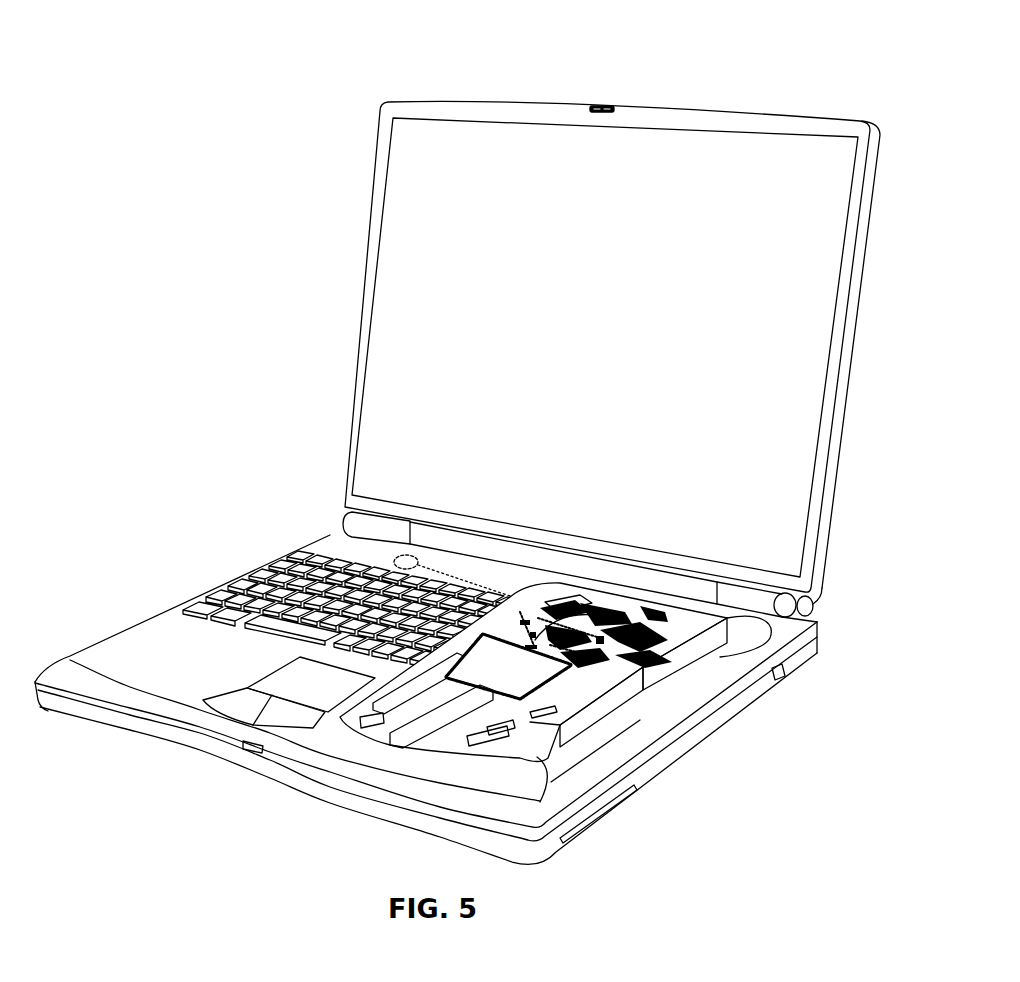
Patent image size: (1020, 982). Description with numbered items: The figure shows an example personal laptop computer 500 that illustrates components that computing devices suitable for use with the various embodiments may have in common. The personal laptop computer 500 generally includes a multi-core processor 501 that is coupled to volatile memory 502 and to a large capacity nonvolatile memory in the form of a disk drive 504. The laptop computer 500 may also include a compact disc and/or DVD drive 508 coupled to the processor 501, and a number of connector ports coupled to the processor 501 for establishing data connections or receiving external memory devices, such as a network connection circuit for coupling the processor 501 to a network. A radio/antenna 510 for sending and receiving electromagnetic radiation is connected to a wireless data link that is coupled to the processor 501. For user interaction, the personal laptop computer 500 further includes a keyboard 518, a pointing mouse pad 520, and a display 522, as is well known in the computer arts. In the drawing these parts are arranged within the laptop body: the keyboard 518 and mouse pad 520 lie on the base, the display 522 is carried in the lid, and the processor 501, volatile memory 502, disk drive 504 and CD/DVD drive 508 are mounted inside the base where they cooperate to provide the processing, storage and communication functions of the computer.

The personal laptop computer 500 is at (781, 96).
The multi-core processor 501 is at (508, 666).
The volatile memory 502 is at (442, 722).
The disk drive 504 is at (567, 762).
The CD and/or DVD drive 508 is at (640, 710).
The radio/antenna 510 is at (395, 558).
The keyboard 518 is at (223, 597).
The mouse pad 520 is at (273, 685).
The display 522 is at (807, 528).